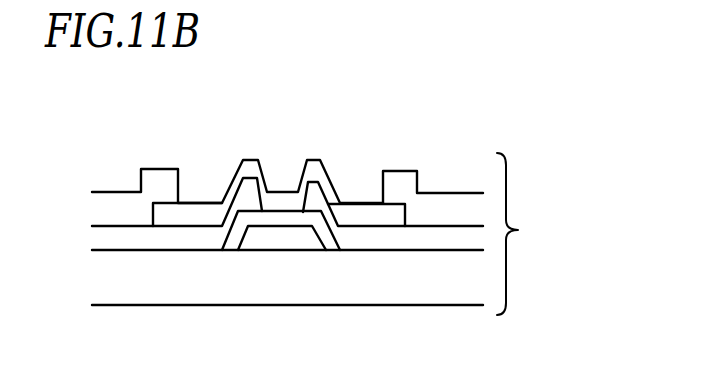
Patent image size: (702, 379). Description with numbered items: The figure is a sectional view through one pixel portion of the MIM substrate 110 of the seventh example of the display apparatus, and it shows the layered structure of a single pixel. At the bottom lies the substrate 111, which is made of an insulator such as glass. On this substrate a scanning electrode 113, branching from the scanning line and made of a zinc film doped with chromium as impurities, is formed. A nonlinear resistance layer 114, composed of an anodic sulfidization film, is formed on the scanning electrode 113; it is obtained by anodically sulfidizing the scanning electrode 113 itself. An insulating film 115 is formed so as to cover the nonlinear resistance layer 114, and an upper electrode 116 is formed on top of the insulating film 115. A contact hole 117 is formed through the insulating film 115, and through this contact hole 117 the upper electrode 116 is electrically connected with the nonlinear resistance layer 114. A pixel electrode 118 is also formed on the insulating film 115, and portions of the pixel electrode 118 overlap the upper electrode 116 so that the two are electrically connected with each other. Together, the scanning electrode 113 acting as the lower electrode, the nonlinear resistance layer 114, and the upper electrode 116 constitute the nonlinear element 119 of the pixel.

The MIM substrate 110 is at (527, 234).
The substrate 111 is at (413, 283).
The scanning electrode 113 is at (274, 236).
The nonlinear resistance layer 114 is at (242, 216).
The insulating film 115 is at (248, 190).
The upper electrode 116 is at (365, 210).
The contact hole 117 is at (278, 162).
The pixel electrode 118 is at (441, 200).
The nonlinear element 119 is at (215, 133).